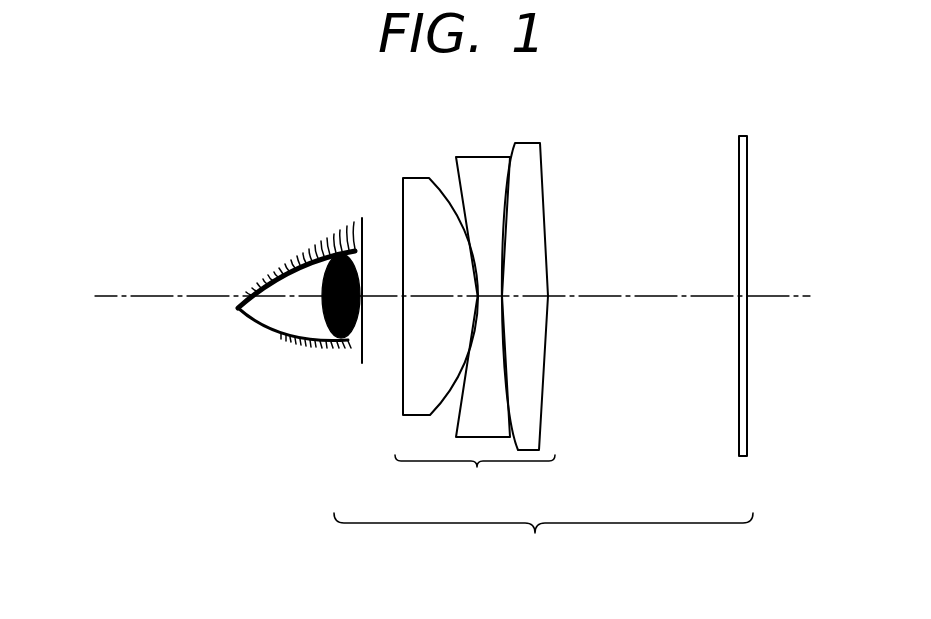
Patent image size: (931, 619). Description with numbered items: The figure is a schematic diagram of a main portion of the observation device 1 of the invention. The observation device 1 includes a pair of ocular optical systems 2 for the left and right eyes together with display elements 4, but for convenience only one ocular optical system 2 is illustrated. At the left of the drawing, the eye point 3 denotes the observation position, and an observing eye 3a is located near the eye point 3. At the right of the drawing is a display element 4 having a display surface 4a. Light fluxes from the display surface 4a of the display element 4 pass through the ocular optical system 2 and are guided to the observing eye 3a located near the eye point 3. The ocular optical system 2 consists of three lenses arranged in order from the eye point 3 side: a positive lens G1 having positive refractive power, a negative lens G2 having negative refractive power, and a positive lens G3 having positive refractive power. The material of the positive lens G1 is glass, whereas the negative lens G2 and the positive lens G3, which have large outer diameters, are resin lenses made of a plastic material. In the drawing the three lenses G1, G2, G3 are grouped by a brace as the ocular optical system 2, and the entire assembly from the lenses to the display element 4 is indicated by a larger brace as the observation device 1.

The observation device 1 is at (543, 539).
The ocular optical system 2 is at (475, 479).
The eye point 3 is at (281, 347).
The observing eye 3a is at (300, 252).
The positive lens G1 is at (418, 185).
The negative lens G2 is at (485, 165).
The positive lens G3 is at (527, 150).
The display element 4 is at (742, 136).
The display surface 4a is at (738, 405).